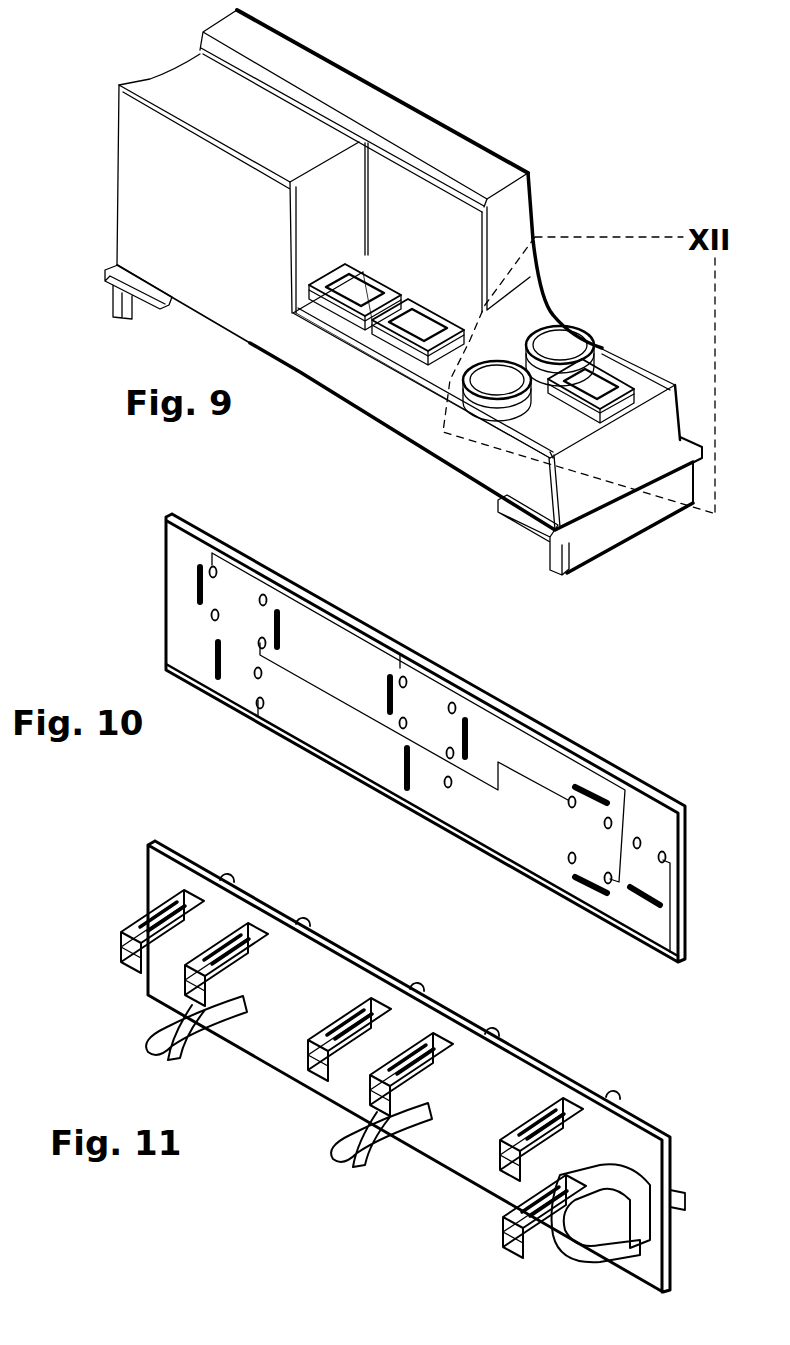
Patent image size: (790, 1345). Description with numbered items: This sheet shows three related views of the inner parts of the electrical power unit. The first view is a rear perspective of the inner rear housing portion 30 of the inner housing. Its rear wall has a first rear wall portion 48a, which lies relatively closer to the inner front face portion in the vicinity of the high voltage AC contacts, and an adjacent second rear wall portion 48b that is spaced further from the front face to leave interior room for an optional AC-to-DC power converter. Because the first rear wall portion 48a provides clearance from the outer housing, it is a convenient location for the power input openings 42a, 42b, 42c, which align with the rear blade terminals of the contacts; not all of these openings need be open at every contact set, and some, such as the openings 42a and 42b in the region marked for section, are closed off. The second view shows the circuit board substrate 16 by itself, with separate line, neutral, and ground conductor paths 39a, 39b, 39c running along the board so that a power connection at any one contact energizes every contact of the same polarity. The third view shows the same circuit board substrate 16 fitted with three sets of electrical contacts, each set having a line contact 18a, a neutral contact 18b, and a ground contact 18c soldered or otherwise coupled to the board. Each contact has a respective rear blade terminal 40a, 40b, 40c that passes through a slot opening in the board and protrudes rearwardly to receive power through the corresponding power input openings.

In FIG. 9, the inner rear housing portion 30 is at (153, 80).
In FIG. 9, the first rear wall portion 48a is at (433, 375).
In FIG. 9, the second rear wall portion 48b is at (258, 113).
In FIG. 9, the power input opening 42a is at (424, 307).
In FIG. 9, the power input opening 42b is at (368, 267).
In FIG. 9, the power input opening 42c is at (614, 366).
In FIG. 10, the circuit board substrate 16 is at (553, 732).
In FIG. 11, the circuit board substrate 16 is at (353, 957).
In FIG. 10, the line conductor path 39a is at (327, 693).
In FIG. 10, the neutral conductor path 39b is at (317, 612).
In FIG. 10, the ground conductor path 39c is at (287, 735).
In FIG. 11, the line contact 18a is at (260, 967).
In FIG. 11, the neutral contact 18b is at (137, 930).
In FIG. 11, the ground contact 18c is at (137, 1027).
In FIG. 11, the rear blade terminal 40a is at (493, 1030).
In FIG. 11, the rear blade terminal 40b is at (227, 877).
In FIG. 11, the rear blade terminal 40c is at (303, 921).